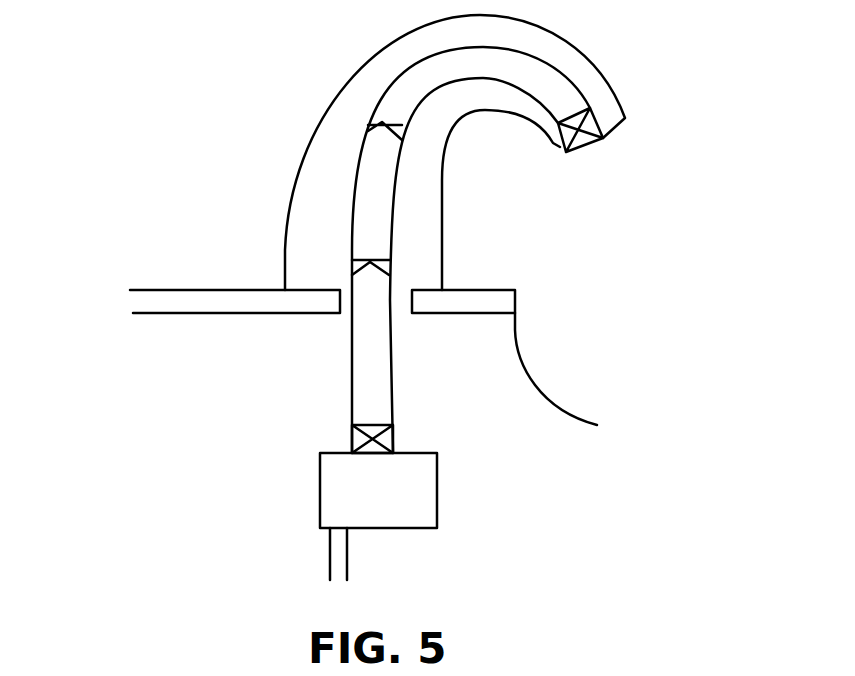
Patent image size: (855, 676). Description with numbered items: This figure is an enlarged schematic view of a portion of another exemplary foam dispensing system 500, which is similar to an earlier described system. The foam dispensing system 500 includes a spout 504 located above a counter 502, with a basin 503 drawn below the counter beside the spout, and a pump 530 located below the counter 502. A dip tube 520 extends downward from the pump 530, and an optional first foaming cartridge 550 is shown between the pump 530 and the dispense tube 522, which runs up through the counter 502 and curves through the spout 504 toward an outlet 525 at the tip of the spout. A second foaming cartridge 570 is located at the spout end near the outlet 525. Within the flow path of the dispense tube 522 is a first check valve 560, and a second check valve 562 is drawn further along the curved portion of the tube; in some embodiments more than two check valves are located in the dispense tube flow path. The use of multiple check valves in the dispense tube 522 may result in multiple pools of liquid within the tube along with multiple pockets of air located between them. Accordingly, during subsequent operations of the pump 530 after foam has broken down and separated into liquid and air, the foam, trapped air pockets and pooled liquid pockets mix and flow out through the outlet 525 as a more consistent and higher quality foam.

The foam dispensing system 500 is at (100, 213).
The counter 502 is at (250, 288).
The sink basin 503 is at (530, 375).
The spout 504 is at (372, 47).
The dip tube 520 is at (347, 563).
The dispense tube 522 is at (392, 83).
The outlet 525 is at (592, 145).
The pump 530 is at (435, 497).
The first foaming cartridge 550 is at (395, 433).
The first check valve 560 is at (370, 262).
The flow element 562 is at (402, 125).
The second foaming cartridge 570 is at (597, 120).